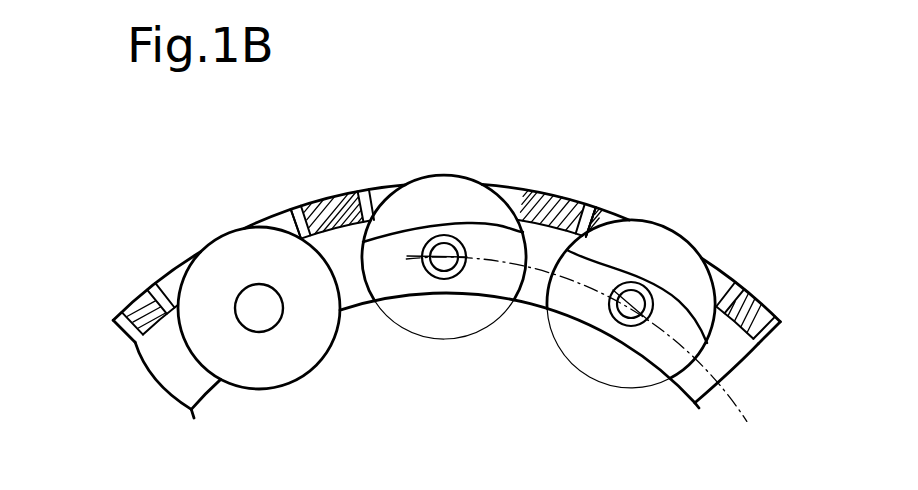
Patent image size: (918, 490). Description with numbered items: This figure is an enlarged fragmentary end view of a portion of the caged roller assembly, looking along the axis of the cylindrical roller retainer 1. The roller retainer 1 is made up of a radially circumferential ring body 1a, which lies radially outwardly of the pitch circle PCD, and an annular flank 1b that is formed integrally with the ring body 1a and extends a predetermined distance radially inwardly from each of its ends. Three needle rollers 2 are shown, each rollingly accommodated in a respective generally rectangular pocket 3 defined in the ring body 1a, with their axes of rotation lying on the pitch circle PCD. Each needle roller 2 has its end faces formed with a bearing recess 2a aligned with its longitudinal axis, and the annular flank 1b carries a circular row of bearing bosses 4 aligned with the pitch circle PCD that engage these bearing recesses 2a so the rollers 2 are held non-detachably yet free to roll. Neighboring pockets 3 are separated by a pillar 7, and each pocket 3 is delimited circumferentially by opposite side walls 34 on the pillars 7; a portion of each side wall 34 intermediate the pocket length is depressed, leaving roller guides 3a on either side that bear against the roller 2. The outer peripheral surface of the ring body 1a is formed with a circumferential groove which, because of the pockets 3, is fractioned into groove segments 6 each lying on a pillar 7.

The roller retainer 1 is at (122, 310).
The radially circumferential ring body 1a is at (132, 337).
The annular flank 1b is at (150, 360).
The needle roller 2 is at (295, 367).
The bearing recess 2a is at (257, 327).
The pocket 3 is at (170, 280).
The roller guide 3a is at (282, 215).
The side wall 34 is at (467, 177).
The bearing boss 4 is at (442, 247).
The groove segment 6 is at (345, 197).
The pillar 7 is at (320, 210).
The pitch circle PCD is at (732, 388).